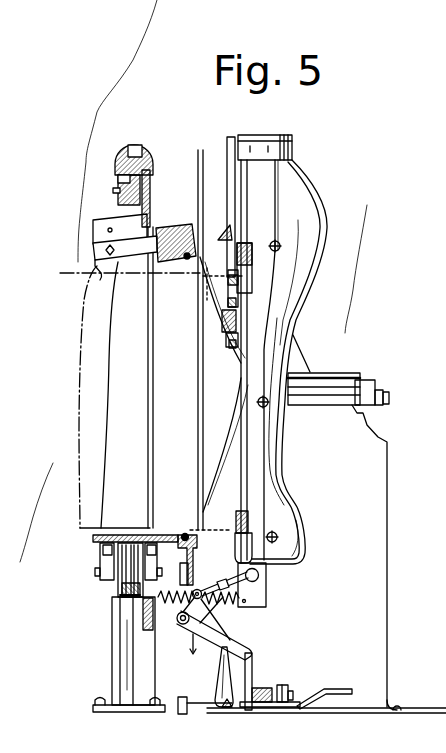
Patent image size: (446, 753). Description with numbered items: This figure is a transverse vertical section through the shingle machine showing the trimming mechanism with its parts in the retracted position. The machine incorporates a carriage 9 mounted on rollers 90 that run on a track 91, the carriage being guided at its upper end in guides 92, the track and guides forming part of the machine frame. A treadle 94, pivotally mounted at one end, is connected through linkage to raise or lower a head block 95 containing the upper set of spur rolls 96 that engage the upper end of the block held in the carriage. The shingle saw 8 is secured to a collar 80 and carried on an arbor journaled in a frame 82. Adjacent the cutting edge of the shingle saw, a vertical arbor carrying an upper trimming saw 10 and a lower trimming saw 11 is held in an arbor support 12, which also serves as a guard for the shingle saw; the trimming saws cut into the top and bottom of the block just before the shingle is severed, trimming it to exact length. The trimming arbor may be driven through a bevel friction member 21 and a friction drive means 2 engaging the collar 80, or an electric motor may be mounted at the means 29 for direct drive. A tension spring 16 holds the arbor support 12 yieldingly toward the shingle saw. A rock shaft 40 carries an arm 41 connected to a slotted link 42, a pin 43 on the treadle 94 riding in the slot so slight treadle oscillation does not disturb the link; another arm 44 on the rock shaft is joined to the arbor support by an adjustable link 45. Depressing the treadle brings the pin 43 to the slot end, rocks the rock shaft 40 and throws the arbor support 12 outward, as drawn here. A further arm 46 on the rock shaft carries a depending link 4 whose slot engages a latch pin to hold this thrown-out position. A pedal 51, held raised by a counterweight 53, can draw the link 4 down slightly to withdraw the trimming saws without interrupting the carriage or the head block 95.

The friction drive means 2 is at (230, 320).
The link 4 is at (213, 695).
The shingle saw 8 is at (200, 444).
The carriage 9 is at (112, 196).
The upper trimming saw 10 is at (252, 270).
The lower trimming saw 11 is at (247, 530).
The arbor support 12 is at (270, 457).
The tension spring 16 is at (229, 627).
The bevel friction member 21 is at (222, 228).
The electric motor mounting means 29 is at (292, 150).
The rock shaft 40 is at (180, 626).
The arm 41 is at (210, 656).
The slotted link 42 is at (255, 660).
The pin or bolt 43 is at (240, 706).
The arm 44 is at (183, 607).
The link 45 is at (211, 586).
The arm 46 is at (223, 626).
The pedal 51 is at (335, 690).
The counterweight 53 is at (178, 714).
The collar 80 is at (215, 400).
The frame 82 is at (326, 543).
The rollers 90 is at (118, 570).
The track 91 is at (120, 598).
The guides 92 is at (119, 179).
The treadle 94 is at (265, 690).
The head block 95 is at (156, 234).
The spur rolls 96 is at (183, 266).